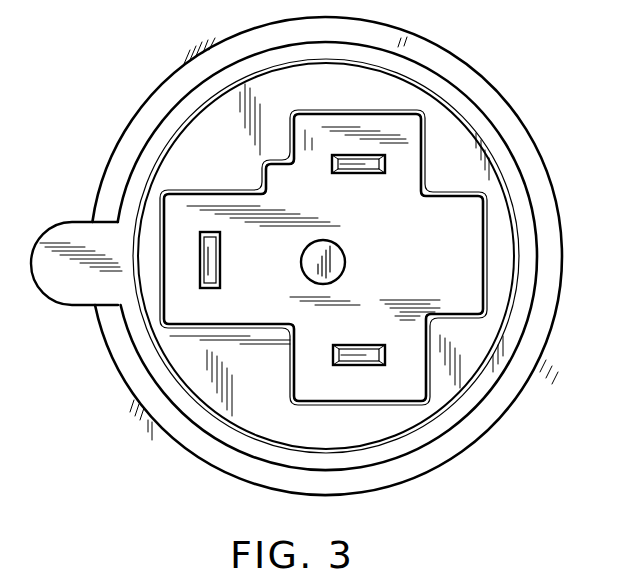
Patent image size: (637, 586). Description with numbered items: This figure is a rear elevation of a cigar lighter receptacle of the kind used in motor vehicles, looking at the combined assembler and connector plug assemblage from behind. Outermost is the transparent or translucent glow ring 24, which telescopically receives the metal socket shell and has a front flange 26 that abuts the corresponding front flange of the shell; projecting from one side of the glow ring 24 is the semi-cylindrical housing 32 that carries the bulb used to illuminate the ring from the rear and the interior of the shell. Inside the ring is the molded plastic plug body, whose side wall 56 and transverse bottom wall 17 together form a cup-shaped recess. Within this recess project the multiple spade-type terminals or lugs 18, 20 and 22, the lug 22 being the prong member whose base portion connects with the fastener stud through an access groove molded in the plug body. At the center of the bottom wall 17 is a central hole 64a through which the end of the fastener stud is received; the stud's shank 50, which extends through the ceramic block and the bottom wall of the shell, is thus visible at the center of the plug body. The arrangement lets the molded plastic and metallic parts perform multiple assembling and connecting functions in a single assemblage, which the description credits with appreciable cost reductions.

The transverse bottom wall 17 is at (470, 273).
The spade-type terminal 18 is at (220, 270).
The spade-type terminal 20 is at (368, 368).
The prong member 22 is at (353, 175).
The glow ring 24 is at (475, 121).
The front flange 26 is at (537, 192).
The semi-cylindrical housing 32 is at (70, 296).
The shank 50 is at (342, 263).
The side wall 56 is at (400, 422).
The central hole 64a is at (349, 250).